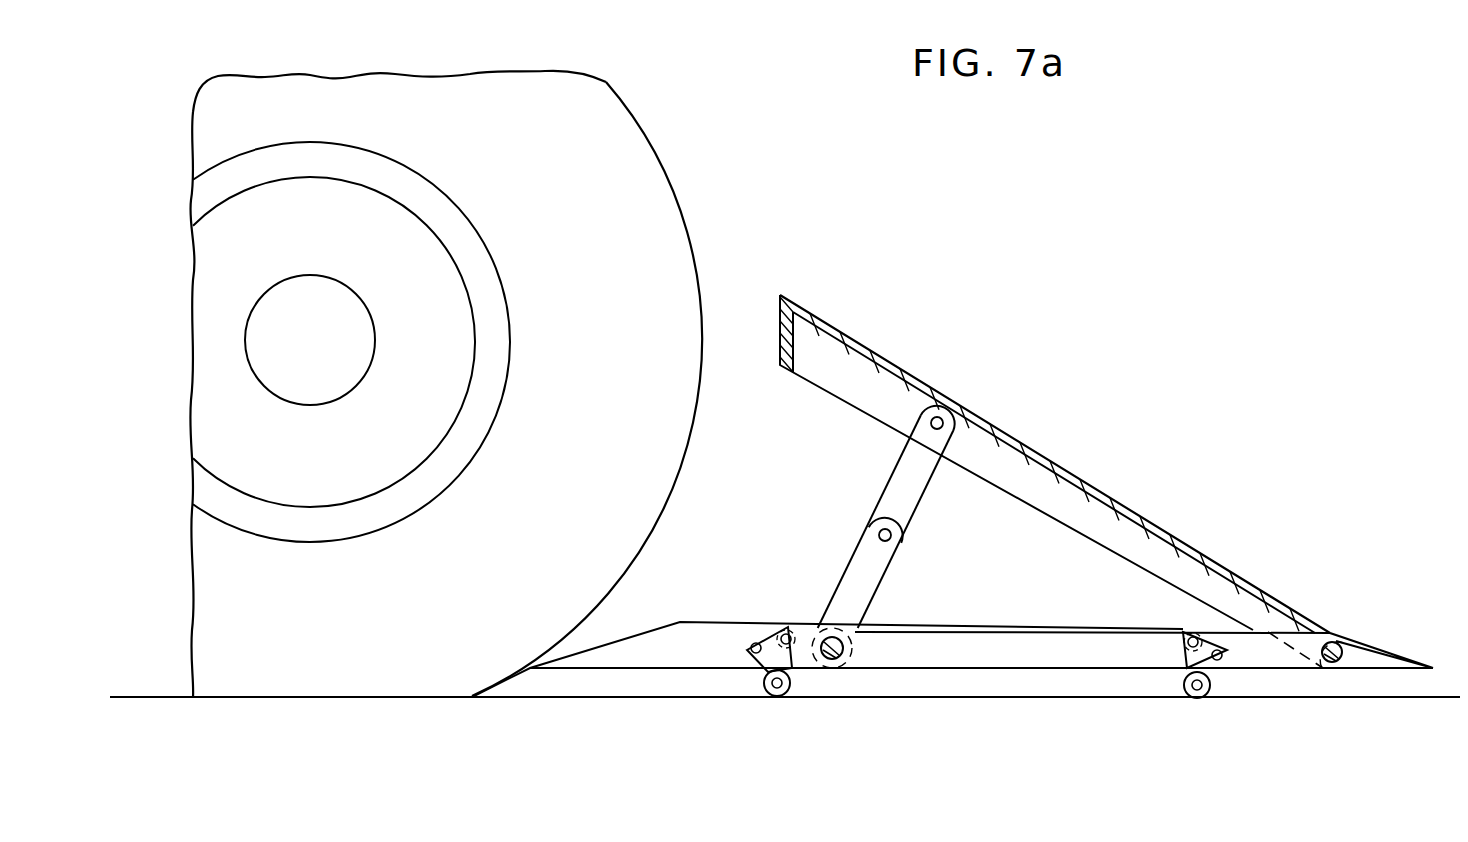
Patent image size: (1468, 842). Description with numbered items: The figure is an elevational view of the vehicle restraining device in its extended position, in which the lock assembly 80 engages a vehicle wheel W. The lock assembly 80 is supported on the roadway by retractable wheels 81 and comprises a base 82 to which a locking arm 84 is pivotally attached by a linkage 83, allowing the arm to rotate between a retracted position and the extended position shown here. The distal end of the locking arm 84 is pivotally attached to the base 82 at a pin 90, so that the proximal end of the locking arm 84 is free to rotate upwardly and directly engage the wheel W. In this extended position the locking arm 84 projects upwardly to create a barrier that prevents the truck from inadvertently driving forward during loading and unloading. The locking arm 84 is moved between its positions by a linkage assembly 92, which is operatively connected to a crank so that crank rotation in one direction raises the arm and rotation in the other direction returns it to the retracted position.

The lock assembly 80 is at (952, 533).
The retractable wheels 81 is at (777, 697).
The base 82 is at (1105, 688).
The linkage 83 is at (852, 521).
The locking arm 84 is at (1118, 505).
The pin 90 is at (1343, 662).
The linkage assembly 92 is at (835, 660).
The vehicle wheel W is at (610, 338).